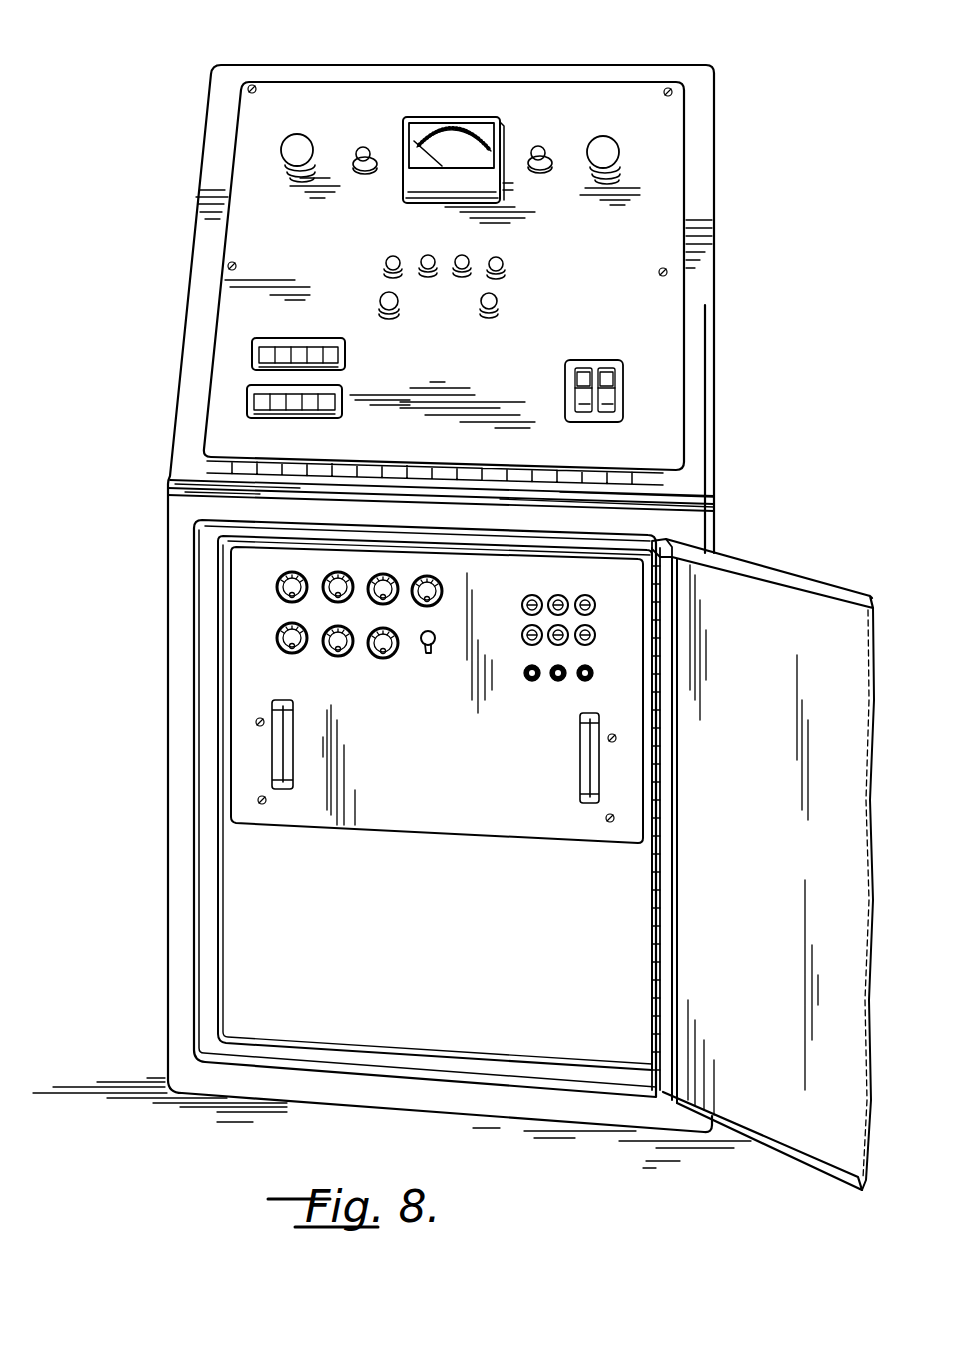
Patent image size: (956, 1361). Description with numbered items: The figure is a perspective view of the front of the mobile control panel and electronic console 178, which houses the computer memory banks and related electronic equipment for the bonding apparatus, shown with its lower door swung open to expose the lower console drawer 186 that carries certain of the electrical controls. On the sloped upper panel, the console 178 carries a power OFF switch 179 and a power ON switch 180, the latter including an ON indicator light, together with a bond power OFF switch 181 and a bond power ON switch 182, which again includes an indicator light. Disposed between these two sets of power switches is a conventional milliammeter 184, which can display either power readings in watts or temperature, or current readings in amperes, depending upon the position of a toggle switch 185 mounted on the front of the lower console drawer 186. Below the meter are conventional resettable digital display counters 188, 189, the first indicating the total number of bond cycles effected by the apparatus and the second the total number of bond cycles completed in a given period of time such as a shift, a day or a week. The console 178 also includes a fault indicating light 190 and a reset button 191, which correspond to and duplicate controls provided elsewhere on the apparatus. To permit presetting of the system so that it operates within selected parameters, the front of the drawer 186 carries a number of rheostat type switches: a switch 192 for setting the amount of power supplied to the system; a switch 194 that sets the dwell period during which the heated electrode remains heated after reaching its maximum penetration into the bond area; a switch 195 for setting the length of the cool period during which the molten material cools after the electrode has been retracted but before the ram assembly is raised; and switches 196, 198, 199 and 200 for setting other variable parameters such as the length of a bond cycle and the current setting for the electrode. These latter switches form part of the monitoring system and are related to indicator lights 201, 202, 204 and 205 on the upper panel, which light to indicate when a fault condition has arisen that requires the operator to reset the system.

The mobile control panel and electronic console 178 is at (675, 538).
The power OFF switch 179 is at (306, 108).
The power ON switch 180 is at (365, 147).
The bond power OFF switch 181 is at (605, 138).
The bond power ON switch 182 is at (541, 147).
The milliammeter 184 is at (470, 117).
The toggle switch 185 is at (427, 655).
The lower console drawer 186 is at (456, 824).
The resettable digital display counter 188 is at (252, 355).
The resettable digital display counter 189 is at (247, 402).
The fault indicating light 190 is at (381, 311).
The reset button 191 is at (497, 312).
The switch 192 is at (390, 660).
The switch 194 is at (387, 573).
The switch 195 is at (433, 576).
The switch 196 is at (291, 571).
The switch 198 is at (345, 571).
The switch 199 is at (281, 651).
The switch 200 is at (338, 657).
The indicator light 201 is at (389, 262).
The indicator light 202 is at (425, 258).
The indicator light 204 is at (465, 260).
The indicator light 205 is at (504, 267).